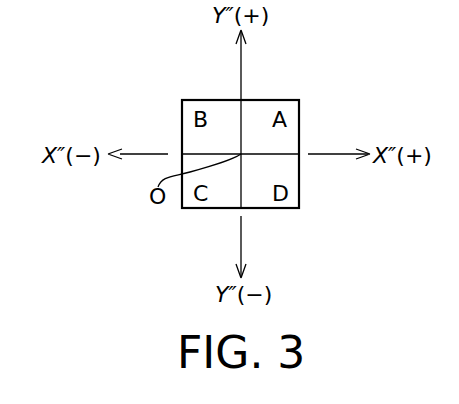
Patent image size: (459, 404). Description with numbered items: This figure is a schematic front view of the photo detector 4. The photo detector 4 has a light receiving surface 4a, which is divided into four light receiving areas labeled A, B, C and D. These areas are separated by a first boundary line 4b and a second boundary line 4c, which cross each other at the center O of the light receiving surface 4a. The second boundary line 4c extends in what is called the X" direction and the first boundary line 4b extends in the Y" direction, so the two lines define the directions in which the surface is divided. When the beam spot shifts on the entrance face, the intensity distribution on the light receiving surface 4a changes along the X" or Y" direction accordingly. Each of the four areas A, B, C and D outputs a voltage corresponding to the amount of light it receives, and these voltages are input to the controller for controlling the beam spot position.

The photo detector 4 is at (347, 87).
The light receiving surface 4a is at (193, 98).
The first boundary line 4b is at (243, 110).
The second boundary line 4c is at (283, 155).